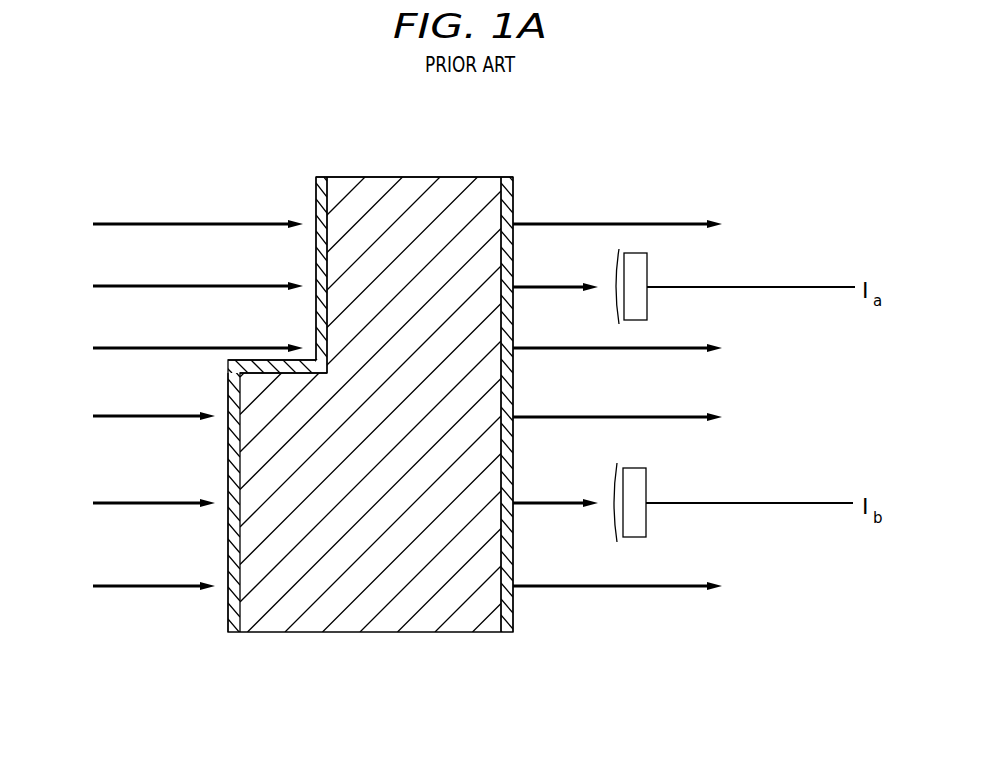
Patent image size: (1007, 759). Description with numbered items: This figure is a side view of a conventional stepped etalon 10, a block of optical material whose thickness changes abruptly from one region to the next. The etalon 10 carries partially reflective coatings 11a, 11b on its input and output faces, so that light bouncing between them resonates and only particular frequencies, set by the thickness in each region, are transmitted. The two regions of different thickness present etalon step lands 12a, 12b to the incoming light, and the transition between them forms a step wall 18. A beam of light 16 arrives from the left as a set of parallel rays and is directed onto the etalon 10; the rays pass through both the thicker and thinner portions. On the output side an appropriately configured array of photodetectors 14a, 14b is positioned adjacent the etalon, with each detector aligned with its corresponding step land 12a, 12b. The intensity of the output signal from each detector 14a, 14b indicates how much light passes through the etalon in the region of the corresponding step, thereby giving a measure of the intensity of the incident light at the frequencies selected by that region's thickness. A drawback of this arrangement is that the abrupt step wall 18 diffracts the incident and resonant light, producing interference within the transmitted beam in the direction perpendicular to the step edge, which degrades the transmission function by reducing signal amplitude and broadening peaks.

The stepped etalon 10 is at (368, 648).
The partially reflective coating 11a is at (319, 177).
The partially reflective coating 11b is at (508, 177).
The etalon step land 12a is at (317, 192).
The etalon step land 12b is at (228, 612).
The photodetector 14a is at (648, 272).
The photodetector 14b is at (646, 518).
The beam of light 16 is at (175, 361).
The step wall 18 is at (262, 361).